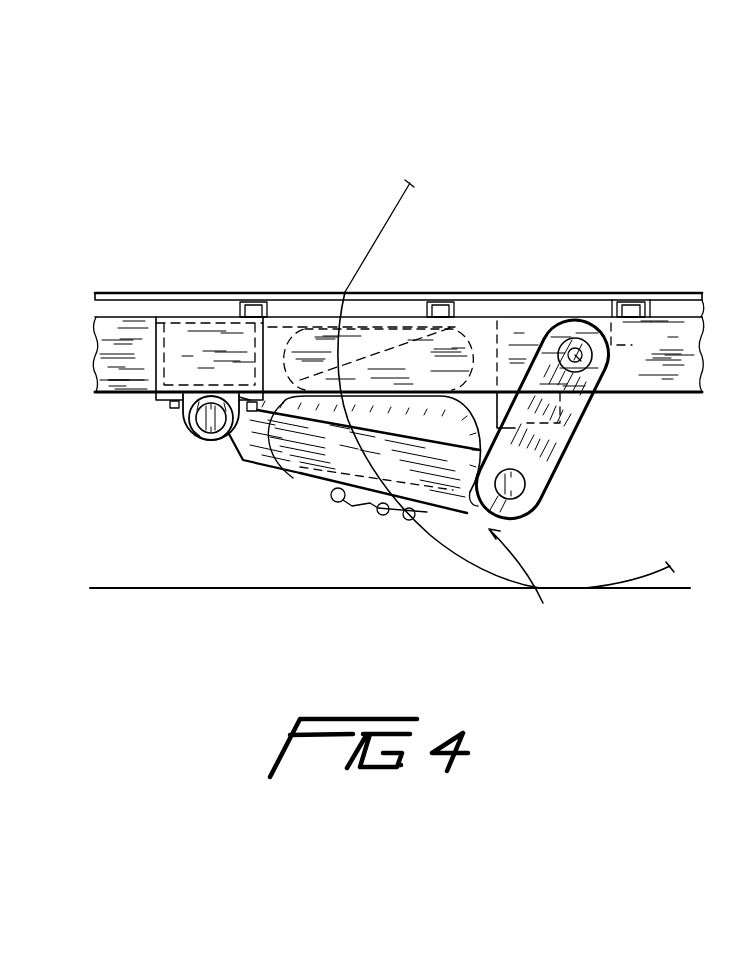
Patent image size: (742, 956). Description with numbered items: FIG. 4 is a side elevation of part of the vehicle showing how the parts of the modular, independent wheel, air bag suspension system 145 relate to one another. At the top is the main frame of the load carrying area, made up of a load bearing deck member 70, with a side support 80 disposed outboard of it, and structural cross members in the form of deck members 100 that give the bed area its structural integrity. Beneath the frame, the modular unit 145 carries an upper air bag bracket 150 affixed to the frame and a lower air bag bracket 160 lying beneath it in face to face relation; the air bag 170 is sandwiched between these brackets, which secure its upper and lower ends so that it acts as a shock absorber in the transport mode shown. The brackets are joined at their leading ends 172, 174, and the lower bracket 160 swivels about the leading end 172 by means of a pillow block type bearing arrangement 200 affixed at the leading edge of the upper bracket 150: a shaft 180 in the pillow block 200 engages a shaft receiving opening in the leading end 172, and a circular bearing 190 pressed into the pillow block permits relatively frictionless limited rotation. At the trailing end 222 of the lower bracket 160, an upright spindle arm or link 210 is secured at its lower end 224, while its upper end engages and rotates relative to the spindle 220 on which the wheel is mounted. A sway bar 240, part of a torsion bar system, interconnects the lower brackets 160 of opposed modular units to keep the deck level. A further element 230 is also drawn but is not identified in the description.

The deck member 70 is at (127, 292).
The side support 80 is at (679, 380).
The deck member (structural cross member) 100 is at (437, 301).
The modular, independent wheel, air bag suspension system 145 is at (581, 583).
The upper air bag bracket 150 is at (283, 292).
The lower air bag bracket 160 is at (290, 483).
The air bag 170 is at (476, 345).
The leading end of upper bracket 172 is at (177, 385).
The leading end of lower bracket 174 is at (250, 440).
The shaft 180 is at (195, 418).
The circular bearing 190 is at (192, 432).
The pillow block type bearing arrangement 200 is at (203, 440).
The upright spindle arm (link) 210 is at (556, 452).
The spindle 220 is at (583, 365).
The trailing end of lower bracket 222 is at (470, 495).
The lower end of link 224 is at (528, 500).
The swing path 230 is at (403, 227).
The sway bar 240 is at (353, 510).